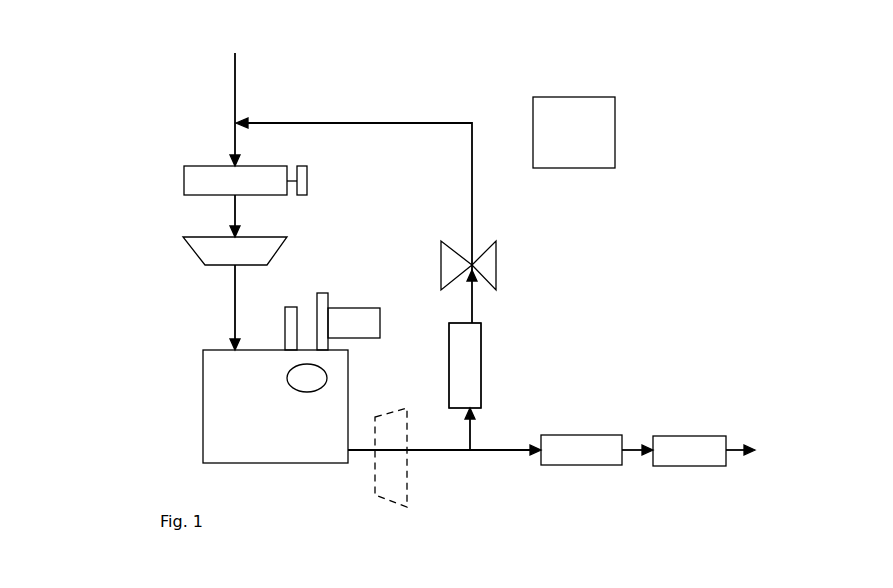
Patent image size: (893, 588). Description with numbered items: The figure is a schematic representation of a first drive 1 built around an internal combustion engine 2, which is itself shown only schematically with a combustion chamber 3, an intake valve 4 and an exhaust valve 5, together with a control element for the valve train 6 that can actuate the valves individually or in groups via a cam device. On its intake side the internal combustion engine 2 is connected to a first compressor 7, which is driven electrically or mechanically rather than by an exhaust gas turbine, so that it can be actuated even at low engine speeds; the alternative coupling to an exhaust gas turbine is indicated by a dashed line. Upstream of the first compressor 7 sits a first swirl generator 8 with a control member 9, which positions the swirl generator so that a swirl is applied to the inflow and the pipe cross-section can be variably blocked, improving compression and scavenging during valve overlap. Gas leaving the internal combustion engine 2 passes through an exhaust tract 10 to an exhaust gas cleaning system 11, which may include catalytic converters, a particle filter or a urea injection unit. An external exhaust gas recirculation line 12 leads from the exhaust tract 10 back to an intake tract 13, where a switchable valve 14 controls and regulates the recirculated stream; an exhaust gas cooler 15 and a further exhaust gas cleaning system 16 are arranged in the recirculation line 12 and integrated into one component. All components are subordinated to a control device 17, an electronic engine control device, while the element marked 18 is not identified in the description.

The first drive 1 is at (98, 100).
The internal combustion engine 2 is at (300, 464).
The combustion chamber 3 is at (327, 378).
The intake valve 4 is at (290, 305).
The exhaust valve 5 is at (320, 292).
The control element for the valve train 6 is at (360, 303).
The first compressor 7 is at (185, 257).
The first swirl generator 8 is at (184, 172).
The control member 9 is at (307, 178).
The exhaust tract 10 is at (422, 450).
The exhaust gas cleaning system 11 is at (600, 488).
The external exhaust gas recirculation line 12 is at (472, 210).
The intake tract 13 is at (236, 70).
The switchable valve 14 is at (497, 262).
The exhaust gas cooler 15 is at (481, 345).
The exhaust gas cleaning system 16 is at (481, 378).
The control device 17 is at (550, 95).
The outlet 18 is at (78, 587).